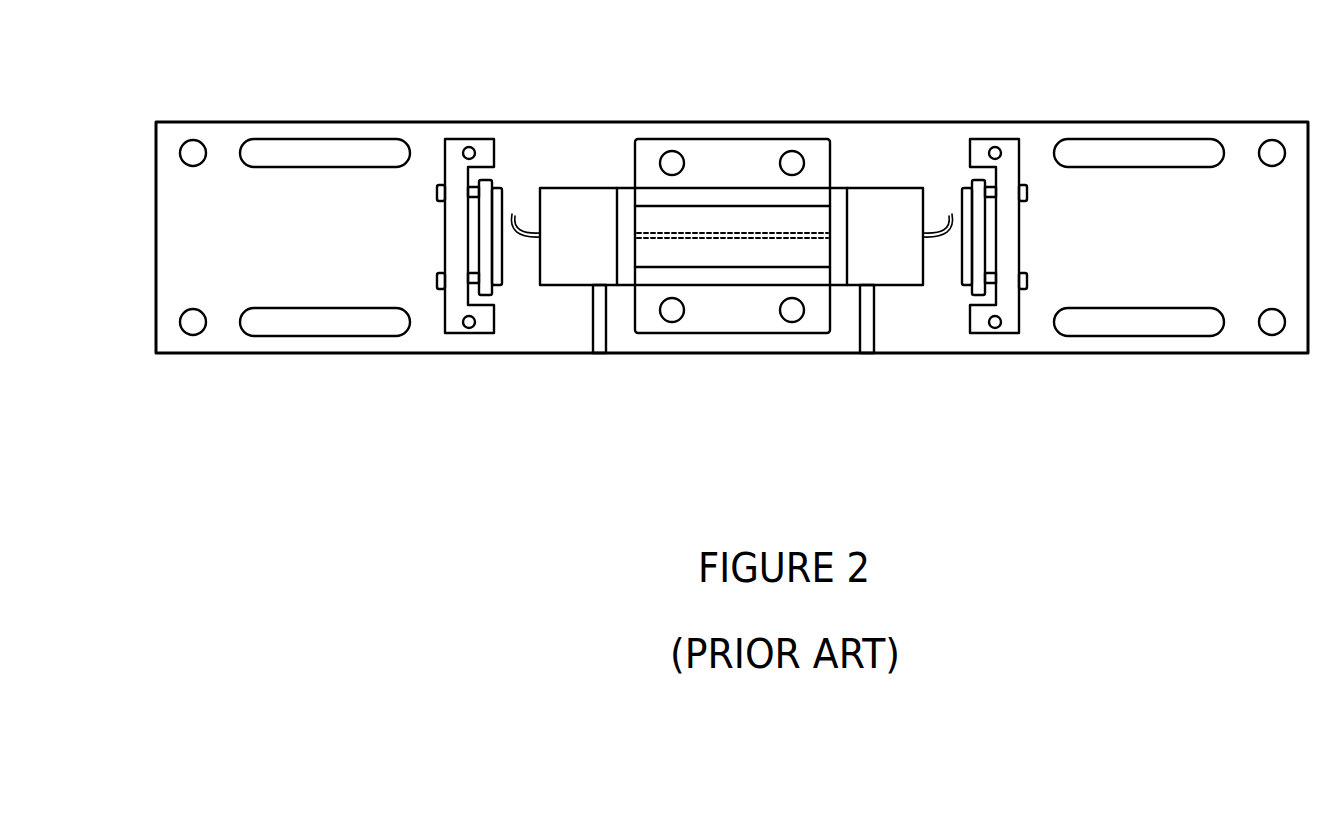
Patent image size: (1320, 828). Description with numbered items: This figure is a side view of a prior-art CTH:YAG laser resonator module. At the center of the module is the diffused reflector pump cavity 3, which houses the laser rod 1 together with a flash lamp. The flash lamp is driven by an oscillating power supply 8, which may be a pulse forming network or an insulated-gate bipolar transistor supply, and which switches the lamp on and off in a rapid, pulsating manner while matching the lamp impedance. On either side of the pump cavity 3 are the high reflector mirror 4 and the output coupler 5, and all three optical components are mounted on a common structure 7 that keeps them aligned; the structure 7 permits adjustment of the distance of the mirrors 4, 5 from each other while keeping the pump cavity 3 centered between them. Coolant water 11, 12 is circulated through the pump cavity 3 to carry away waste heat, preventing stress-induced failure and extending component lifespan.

The laser rod 1 is at (717, 233).
The pump cavity 3 is at (808, 205).
The high reflector mirror 4 is at (503, 198).
The output coupler 5 is at (958, 202).
The structure 7 is at (313, 121).
The oscillating power supply 8 is at (517, 227).
The coolant water 11 is at (590, 336).
The coolant water 12 is at (875, 320).